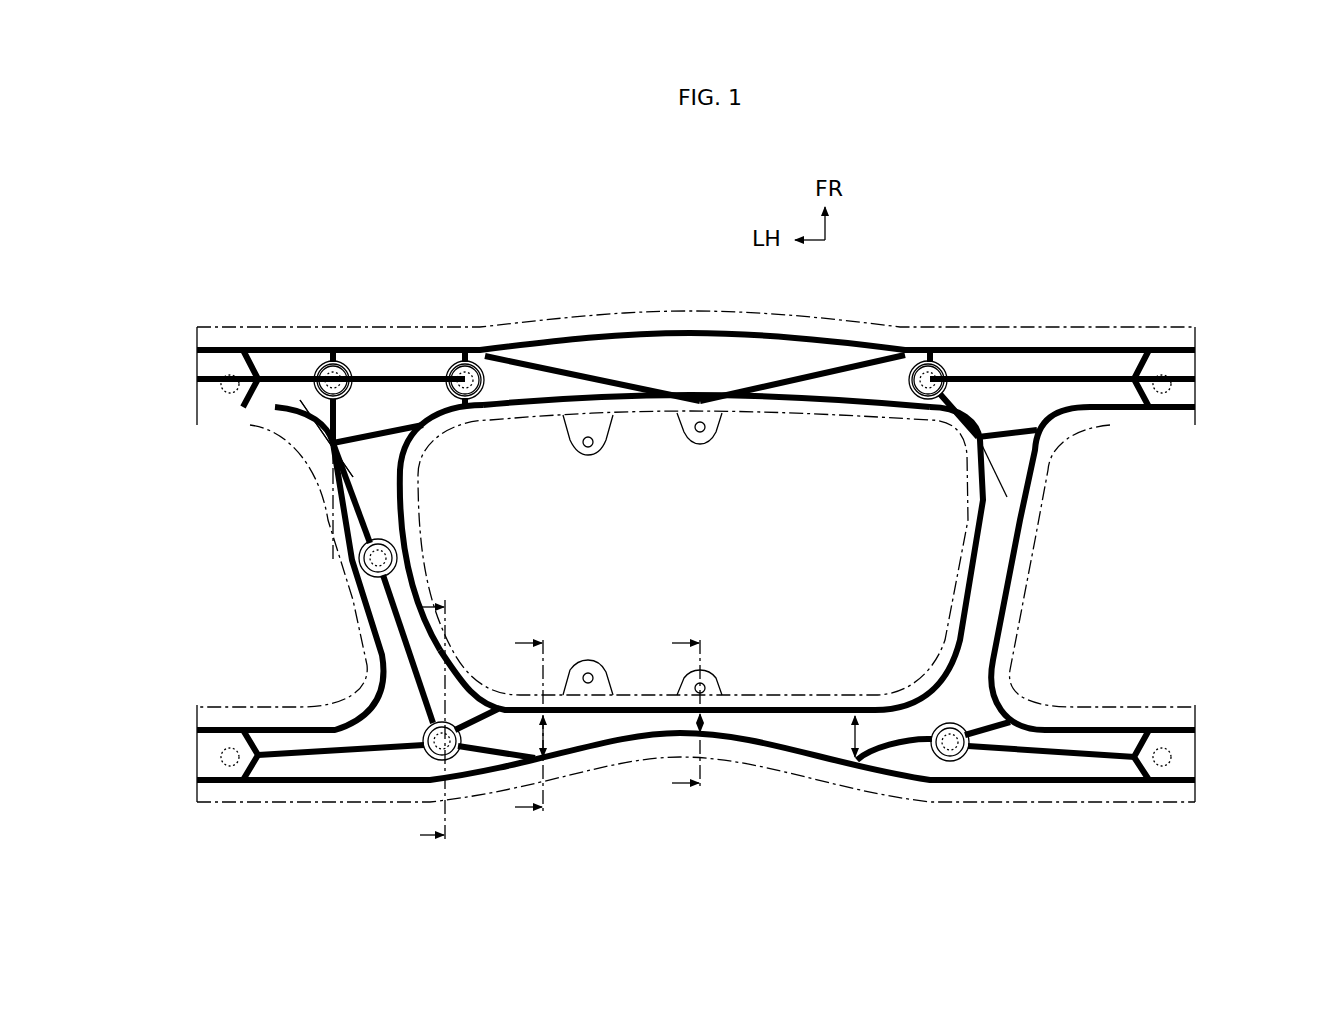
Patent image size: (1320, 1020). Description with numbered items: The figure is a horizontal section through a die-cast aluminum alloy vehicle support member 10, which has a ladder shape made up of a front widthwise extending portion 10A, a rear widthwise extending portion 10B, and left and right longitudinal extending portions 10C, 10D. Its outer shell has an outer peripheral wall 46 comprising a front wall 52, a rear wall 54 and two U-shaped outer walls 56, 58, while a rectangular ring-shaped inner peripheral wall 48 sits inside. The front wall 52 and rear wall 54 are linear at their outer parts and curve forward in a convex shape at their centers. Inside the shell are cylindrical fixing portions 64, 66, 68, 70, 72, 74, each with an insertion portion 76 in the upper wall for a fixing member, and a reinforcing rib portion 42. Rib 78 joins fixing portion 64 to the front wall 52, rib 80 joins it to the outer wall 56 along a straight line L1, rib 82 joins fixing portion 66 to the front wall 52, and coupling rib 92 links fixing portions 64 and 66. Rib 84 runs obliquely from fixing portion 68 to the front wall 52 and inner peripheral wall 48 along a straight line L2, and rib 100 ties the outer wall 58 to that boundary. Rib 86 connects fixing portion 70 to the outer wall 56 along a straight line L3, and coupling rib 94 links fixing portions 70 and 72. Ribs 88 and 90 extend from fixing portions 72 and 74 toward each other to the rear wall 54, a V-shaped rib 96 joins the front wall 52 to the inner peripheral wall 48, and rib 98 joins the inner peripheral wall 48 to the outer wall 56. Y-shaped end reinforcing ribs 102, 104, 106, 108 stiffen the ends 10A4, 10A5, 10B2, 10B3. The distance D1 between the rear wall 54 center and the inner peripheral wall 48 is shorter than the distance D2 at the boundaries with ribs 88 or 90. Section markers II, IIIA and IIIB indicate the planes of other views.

The support member 10 is at (1015, 242).
The widthwise extending portion 10A is at (636, 313).
The end of the widthwise extending portion 10A4 is at (226, 327).
The end of the widthwise extending portion 10A5 is at (1178, 327).
The widthwise extending portion 10B is at (596, 772).
The end of the widthwise extending portion 10B2 is at (258, 802).
The end of the widthwise extending portion 10B3 is at (1120, 802).
The longitudinal extending portion 10C is at (332, 561).
The longitudinal extending portion 10D is at (1032, 582).
The reinforcing rib portion 42 is at (612, 372).
The outer peripheral wall 46 is at (550, 323).
The inner peripheral wall 48 is at (402, 490).
The front wall 52 is at (690, 333).
The rear wall 54 is at (803, 752).
The outer wall 56 is at (372, 623).
The outer wall 58 is at (1022, 530).
The fixing portion 64 is at (298, 348).
The fixing portion 66 is at (450, 364).
The fixing portion 68 is at (923, 348).
The fixing portion 70 is at (396, 546).
The fixing portion 72 is at (432, 765).
The fixing portion 74 is at (948, 722).
The insertion portion 76 is at (348, 366).
The fixing-portion connecting rib 78 is at (318, 347).
The fixing-portion connecting rib 80 is at (338, 421).
The fixing-portion connecting rib 82 is at (482, 348).
The fixing-portion connecting rib 84 is at (963, 348).
The fixing-portion connecting rib 86 is at (330, 478).
The fixing-portion connecting rib 88 is at (487, 715).
The fixing-portion connecting rib 90 is at (903, 742).
The fixing-portion coupling rib 92 is at (367, 376).
The fixing-portion coupling rib 94 is at (410, 681).
The wall connecting rib 96 is at (800, 374).
The wall connecting rib 98 is at (408, 446).
The wall connecting rib 100 is at (1010, 435).
The end reinforcing rib 102 is at (243, 366).
The end reinforcing rib 104 is at (1060, 377).
The end reinforcing rib 106 is at (272, 752).
The end reinforcing rib 108 is at (1082, 752).
The straight line L1 is at (328, 487).
The straight line L2 is at (1005, 483).
The straight line L3 is at (336, 412).
The distance D1 is at (703, 725).
The distance D2 is at (546, 737).
The section line II is at (433, 722).
The section line IIIA is at (681, 714).
The section line IIIB is at (524, 727).